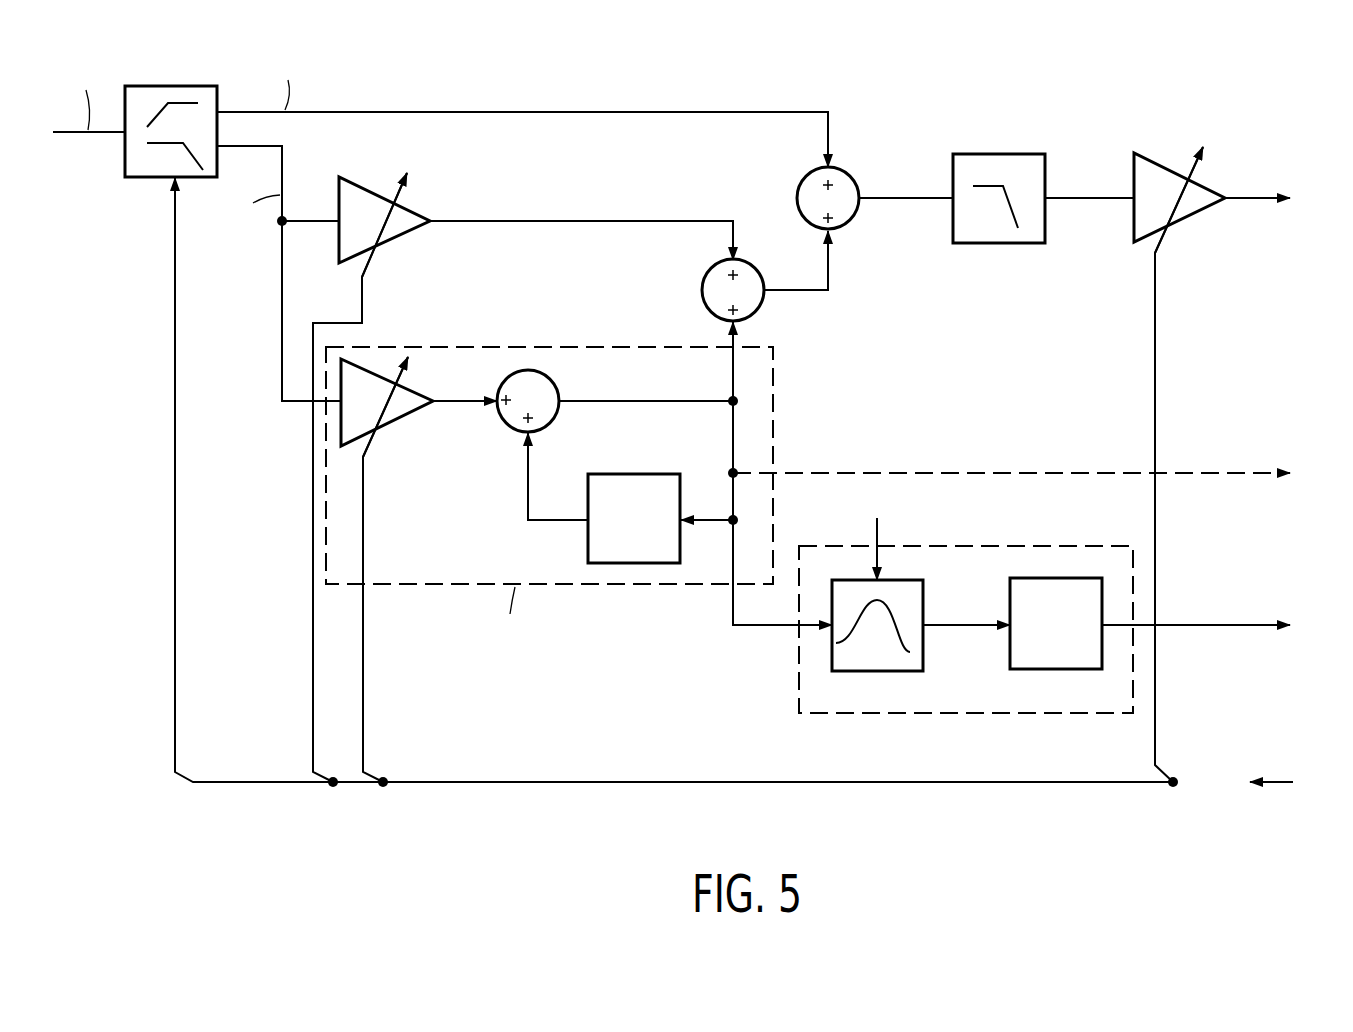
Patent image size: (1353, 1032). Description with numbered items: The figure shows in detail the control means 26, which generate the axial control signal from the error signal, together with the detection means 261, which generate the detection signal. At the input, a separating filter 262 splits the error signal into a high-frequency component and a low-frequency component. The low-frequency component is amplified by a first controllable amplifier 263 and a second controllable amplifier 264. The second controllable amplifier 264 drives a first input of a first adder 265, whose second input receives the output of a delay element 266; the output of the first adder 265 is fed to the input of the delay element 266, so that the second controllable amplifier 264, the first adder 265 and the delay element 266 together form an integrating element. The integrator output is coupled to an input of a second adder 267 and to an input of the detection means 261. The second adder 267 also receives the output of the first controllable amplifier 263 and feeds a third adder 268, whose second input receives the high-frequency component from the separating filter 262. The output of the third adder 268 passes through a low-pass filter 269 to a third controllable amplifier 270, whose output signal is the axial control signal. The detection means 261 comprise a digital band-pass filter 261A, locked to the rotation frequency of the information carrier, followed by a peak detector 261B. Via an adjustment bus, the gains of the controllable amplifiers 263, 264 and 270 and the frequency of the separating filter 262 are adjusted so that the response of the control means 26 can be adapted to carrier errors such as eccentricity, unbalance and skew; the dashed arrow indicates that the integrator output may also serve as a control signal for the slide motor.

The control means 26 is at (471, 806).
The detection means 261 is at (984, 715).
The digital band-pass filter 261A is at (873, 672).
The peak detector 261B is at (1068, 672).
The separating filter 262 is at (152, 93).
The first controllable amplifier 263 is at (398, 230).
The second controllable amplifier 264 is at (402, 410).
The first adder 265 is at (548, 422).
The delay element 266 is at (652, 472).
The second adder 267 is at (755, 305).
The third adder 268 is at (851, 217).
The low-pass filter 269 is at (1008, 160).
The third controllable amplifier 270 is at (1196, 207).